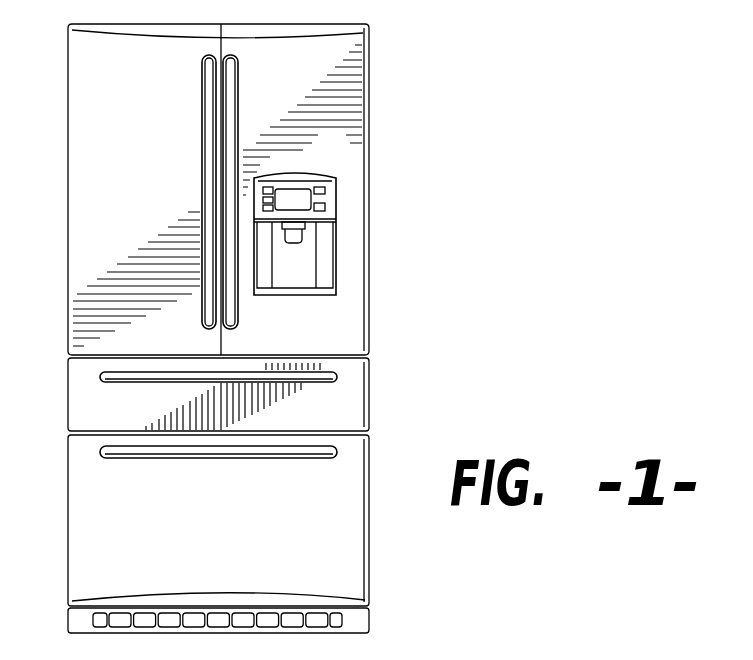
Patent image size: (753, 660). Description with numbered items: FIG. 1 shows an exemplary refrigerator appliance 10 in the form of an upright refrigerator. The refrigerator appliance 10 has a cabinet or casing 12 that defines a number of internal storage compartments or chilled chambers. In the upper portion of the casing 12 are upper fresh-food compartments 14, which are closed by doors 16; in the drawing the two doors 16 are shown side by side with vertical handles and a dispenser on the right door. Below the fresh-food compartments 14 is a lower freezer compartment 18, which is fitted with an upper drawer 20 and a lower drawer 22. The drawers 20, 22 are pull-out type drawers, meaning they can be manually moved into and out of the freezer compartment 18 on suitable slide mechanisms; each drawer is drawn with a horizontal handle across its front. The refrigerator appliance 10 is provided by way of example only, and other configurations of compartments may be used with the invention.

The refrigerator appliance 10 is at (423, 110).
The cabinet or casing 12 is at (370, 272).
The upper fresh-food compartment 14 is at (102, 164).
The door 16 is at (128, 243).
The lower freezer compartment 18 is at (336, 400).
The upper drawer 20 is at (122, 419).
The lower drawer 22 is at (235, 538).